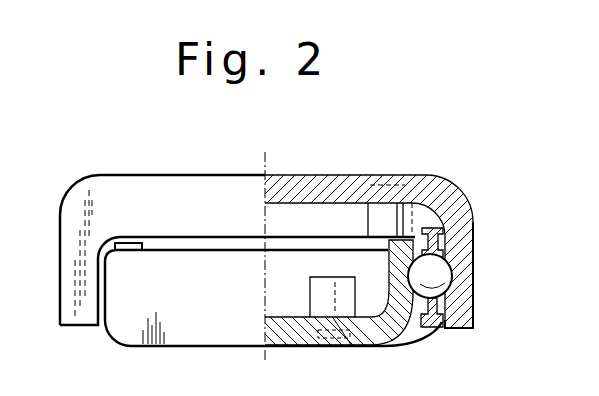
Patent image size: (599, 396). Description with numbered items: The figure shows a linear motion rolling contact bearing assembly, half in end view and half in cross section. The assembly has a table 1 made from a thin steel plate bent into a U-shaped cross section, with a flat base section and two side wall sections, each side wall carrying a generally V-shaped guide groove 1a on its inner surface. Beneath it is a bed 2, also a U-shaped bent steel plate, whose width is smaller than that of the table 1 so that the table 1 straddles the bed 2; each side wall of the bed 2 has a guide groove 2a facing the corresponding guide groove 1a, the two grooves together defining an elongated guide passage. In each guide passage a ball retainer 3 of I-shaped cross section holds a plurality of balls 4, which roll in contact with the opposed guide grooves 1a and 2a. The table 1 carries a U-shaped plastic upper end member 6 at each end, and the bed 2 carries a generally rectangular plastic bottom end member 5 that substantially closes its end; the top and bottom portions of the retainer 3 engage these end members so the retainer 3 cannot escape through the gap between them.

The table 1 is at (324, 193).
The guide groove 1a is at (458, 268).
The bed 2 is at (307, 330).
The guide groove 2a is at (400, 313).
The ball retainer 3 is at (452, 232).
The ball 4 is at (428, 282).
The bottom end member 5 is at (206, 300).
The upper end member 6 is at (118, 200).